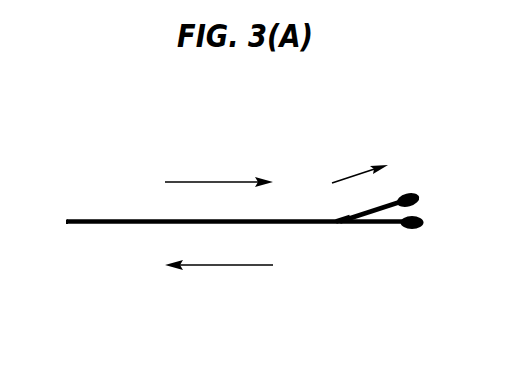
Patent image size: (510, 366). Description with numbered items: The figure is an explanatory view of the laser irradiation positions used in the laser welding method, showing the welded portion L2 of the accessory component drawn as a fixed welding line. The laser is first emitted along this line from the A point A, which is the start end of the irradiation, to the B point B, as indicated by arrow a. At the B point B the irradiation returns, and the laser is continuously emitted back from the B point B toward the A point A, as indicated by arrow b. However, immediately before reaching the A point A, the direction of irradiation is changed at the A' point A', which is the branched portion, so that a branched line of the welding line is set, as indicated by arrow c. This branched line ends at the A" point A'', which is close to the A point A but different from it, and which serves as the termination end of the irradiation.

The welded portion L2 is at (112, 188).
The B point B is at (68, 226).
The A point A is at (428, 269).
The A' point A' is at (344, 271).
The A" point A'' is at (404, 171).
The arrow a is at (219, 276).
The arrow b is at (219, 168).
The arrow c is at (360, 165).